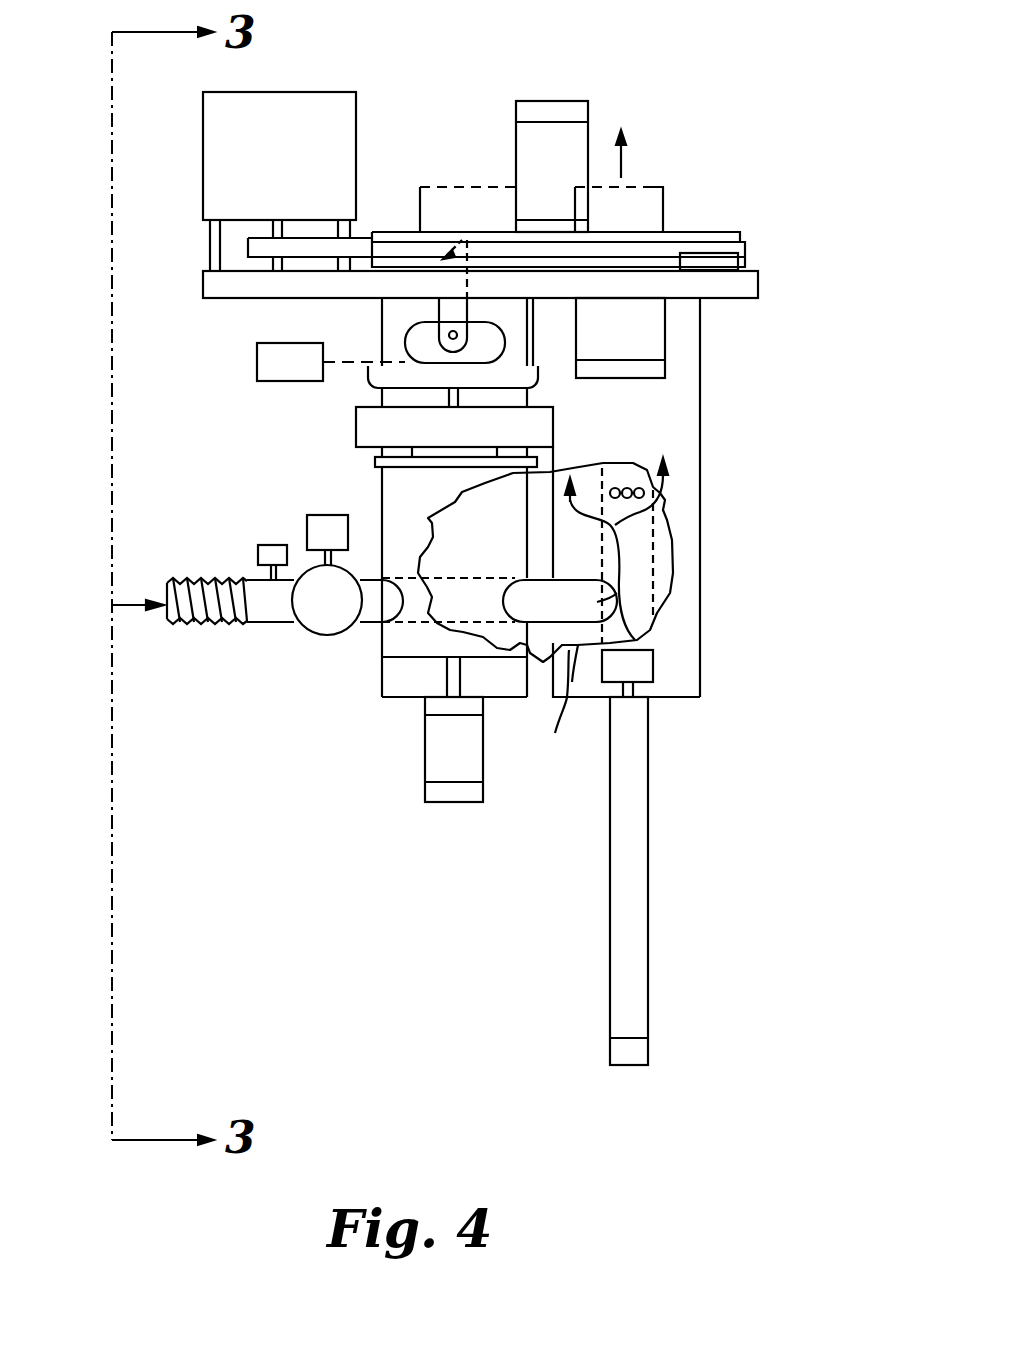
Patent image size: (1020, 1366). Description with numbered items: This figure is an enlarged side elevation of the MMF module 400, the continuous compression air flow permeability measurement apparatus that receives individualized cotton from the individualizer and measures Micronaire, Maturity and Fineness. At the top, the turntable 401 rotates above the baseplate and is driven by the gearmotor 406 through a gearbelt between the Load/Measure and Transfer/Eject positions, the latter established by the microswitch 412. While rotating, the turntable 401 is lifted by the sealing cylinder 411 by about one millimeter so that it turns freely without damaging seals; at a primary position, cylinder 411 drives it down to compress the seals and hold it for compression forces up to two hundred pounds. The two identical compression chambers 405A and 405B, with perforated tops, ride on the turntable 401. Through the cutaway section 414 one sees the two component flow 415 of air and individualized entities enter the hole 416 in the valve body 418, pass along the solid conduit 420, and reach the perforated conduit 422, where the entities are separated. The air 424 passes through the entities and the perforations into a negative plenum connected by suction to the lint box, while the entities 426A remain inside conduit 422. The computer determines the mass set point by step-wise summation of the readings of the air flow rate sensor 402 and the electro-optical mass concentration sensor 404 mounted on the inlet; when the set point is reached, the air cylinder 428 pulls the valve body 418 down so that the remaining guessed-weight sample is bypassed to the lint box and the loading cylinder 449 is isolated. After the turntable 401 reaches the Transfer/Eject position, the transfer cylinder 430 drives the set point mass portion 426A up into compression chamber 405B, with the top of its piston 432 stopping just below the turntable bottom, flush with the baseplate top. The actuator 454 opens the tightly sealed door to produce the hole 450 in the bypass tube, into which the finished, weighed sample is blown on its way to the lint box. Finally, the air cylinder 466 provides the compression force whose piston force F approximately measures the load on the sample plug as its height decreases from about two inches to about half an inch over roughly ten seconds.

The MMF module 400 is at (305, 822).
The turntable 401 is at (708, 231).
The air flow rate sensor 402 is at (258, 553).
The mass concentration sensor 404 is at (318, 515).
The compression chamber 405A is at (650, 187).
The compression chamber 405B is at (473, 185).
The gearmotor 406 is at (313, 92).
The sealing cylinder 411 is at (560, 100).
The microswitch 412 is at (740, 260).
The cutaway section 414 is at (558, 711).
The two component flow 415 is at (125, 607).
The hole 416 is at (462, 578).
The valve body 418 is at (488, 519).
The solid conduit 420 is at (483, 637).
The perforated conduit 422 is at (653, 575).
The air 424 is at (660, 520).
The set point mass portion of sample 426A is at (640, 470).
The air cylinder 428 is at (448, 802).
The transfer cylinder 430 is at (610, 990).
The piston 432 is at (653, 668).
The loading cylinder 449 is at (700, 643).
The hole 450 is at (413, 332).
The actuator 454 is at (257, 352).
The air cylinder 466 is at (665, 342).